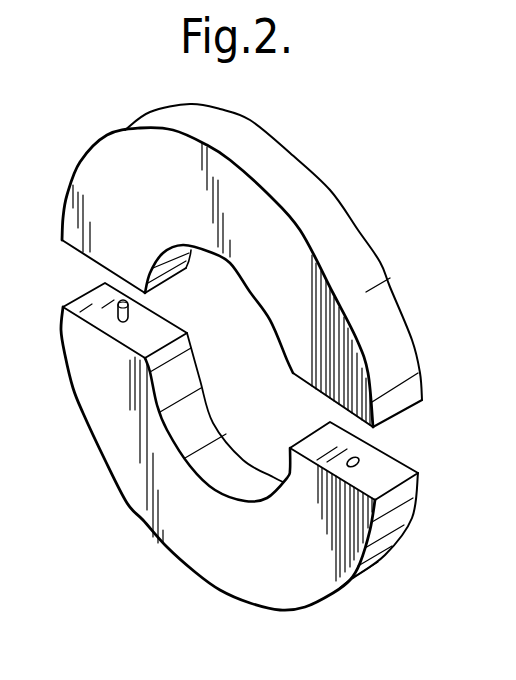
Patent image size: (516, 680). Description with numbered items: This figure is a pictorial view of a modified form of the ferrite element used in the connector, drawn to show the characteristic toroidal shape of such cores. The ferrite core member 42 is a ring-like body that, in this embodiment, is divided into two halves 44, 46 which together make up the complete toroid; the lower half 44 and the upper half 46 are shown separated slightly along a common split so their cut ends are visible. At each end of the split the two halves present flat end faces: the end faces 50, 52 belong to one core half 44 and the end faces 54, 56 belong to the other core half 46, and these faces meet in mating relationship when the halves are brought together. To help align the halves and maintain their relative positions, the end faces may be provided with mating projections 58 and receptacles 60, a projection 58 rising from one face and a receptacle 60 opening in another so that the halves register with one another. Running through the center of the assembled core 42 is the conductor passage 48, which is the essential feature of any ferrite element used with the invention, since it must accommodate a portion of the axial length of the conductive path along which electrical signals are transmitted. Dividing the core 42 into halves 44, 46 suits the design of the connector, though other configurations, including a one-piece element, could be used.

The ferrite core member 42 is at (41, 203).
The core half 44 is at (318, 577).
The core half 46 is at (288, 165).
The conductor passage 48 is at (252, 363).
The end face 50 is at (386, 484).
The end face 52 is at (62, 309).
The end face 54 is at (393, 417).
The end face 56 is at (72, 250).
The mating projection 58 is at (128, 312).
The receptacle 60 is at (361, 462).